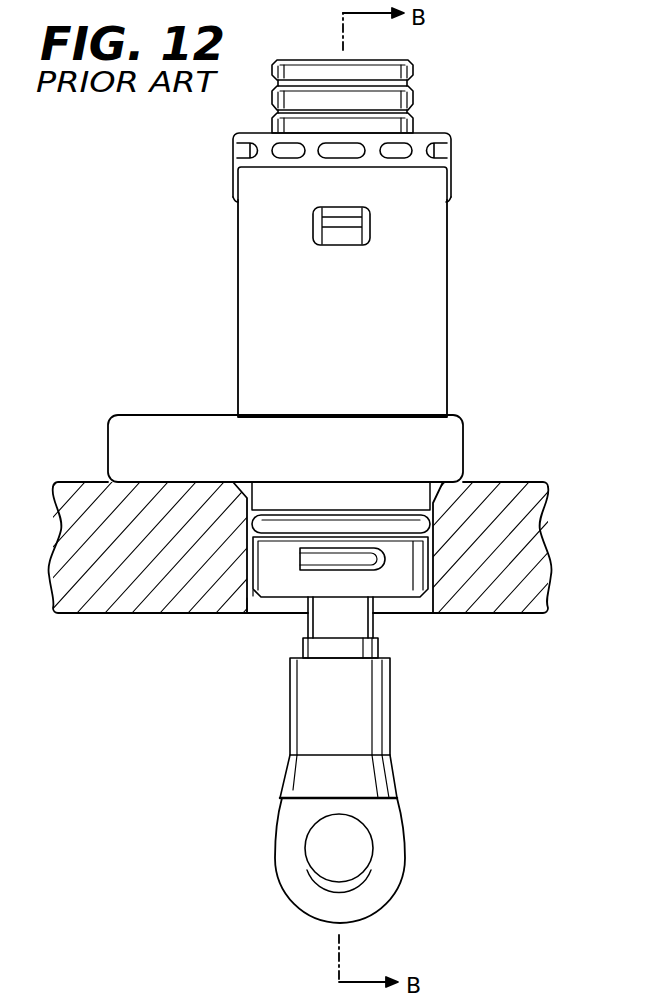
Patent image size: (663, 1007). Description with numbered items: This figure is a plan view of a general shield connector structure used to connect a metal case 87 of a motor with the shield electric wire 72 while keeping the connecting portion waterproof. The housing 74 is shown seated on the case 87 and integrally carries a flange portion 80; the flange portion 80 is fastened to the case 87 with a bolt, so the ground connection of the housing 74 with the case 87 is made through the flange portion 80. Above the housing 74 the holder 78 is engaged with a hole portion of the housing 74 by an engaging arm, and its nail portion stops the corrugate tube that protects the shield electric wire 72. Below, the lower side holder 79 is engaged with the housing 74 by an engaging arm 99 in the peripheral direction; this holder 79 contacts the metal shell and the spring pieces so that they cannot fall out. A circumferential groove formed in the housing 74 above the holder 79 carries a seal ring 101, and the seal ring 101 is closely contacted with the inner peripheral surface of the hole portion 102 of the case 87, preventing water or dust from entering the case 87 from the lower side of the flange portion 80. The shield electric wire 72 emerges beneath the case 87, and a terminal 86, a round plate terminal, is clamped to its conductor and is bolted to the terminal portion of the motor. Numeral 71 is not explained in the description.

The solenoid valve 71 is at (401, 308).
The shield electric wire 72 is at (296, 626).
The housing 74 is at (456, 311).
The holder 78 is at (447, 133).
The lower side holder 79 is at (400, 604).
The flange portion 80 is at (145, 415).
The terminal 86 is at (388, 848).
The metal case 87 is at (508, 482).
The engaging arm 99 is at (430, 560).
The seal ring 101 is at (433, 517).
The hole portion 102 is at (260, 603).